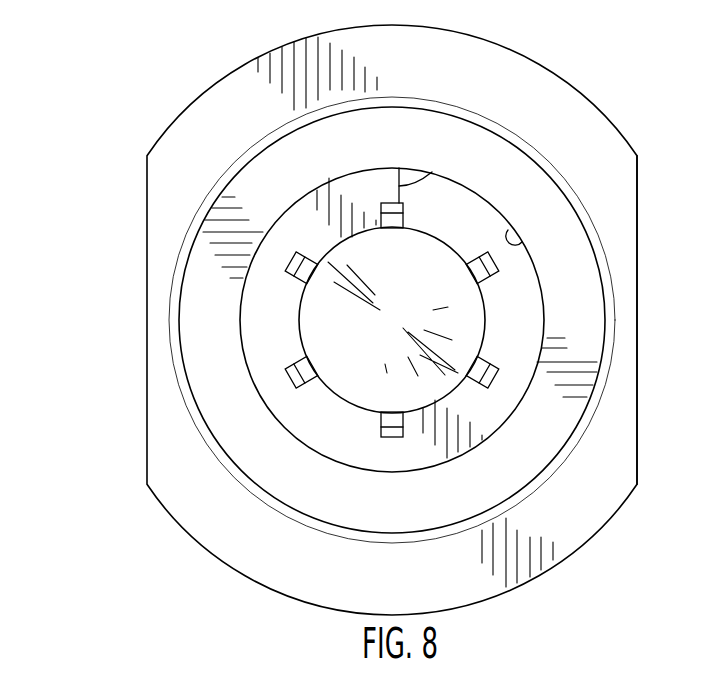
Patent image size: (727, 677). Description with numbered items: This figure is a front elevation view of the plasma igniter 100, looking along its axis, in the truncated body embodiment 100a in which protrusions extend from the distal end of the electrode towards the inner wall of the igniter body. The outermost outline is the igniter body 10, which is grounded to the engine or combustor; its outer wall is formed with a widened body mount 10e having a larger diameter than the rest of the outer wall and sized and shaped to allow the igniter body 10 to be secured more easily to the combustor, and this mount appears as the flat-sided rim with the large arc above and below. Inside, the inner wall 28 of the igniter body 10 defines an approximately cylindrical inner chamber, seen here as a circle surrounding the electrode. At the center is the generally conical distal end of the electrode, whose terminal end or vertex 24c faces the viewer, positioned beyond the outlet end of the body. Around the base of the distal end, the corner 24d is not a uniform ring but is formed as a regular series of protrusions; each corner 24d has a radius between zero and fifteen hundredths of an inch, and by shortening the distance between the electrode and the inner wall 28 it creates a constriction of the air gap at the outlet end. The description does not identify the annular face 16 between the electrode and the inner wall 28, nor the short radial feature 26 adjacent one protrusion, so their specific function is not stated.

The igniter body 10 is at (603, 99).
The widened body mount 10e is at (638, 259).
The inner annular face 16 is at (528, 354).
The terminal end or vertex 24c is at (391, 321).
The corner 24d is at (477, 270).
The radial slot 26 is at (400, 186).
The inner wall 28 is at (523, 242).
The plasma igniter 100 is at (108, 618).
The truncated body embodiment 100a is at (204, 573).